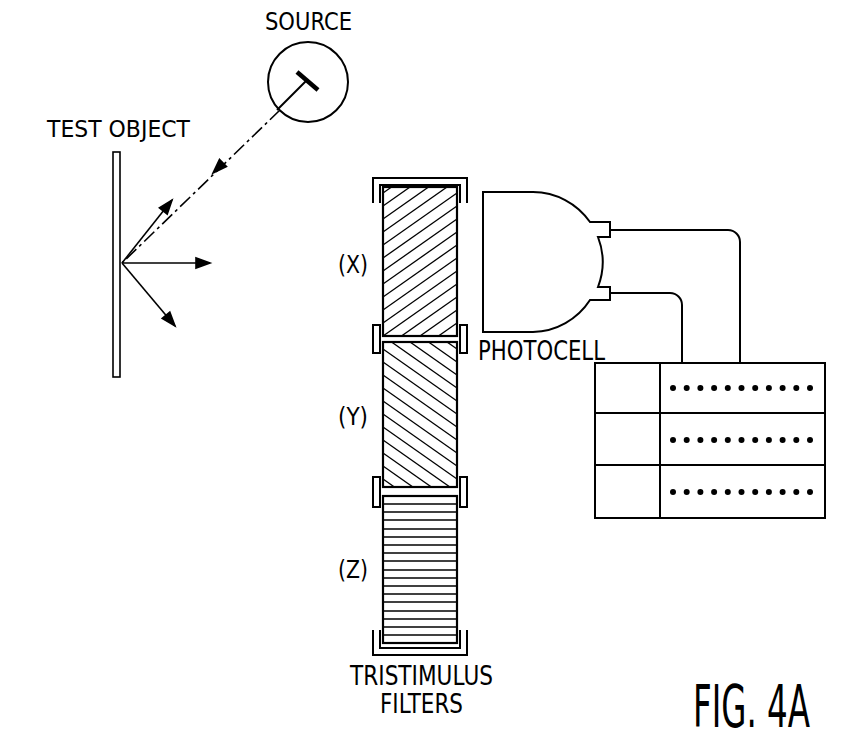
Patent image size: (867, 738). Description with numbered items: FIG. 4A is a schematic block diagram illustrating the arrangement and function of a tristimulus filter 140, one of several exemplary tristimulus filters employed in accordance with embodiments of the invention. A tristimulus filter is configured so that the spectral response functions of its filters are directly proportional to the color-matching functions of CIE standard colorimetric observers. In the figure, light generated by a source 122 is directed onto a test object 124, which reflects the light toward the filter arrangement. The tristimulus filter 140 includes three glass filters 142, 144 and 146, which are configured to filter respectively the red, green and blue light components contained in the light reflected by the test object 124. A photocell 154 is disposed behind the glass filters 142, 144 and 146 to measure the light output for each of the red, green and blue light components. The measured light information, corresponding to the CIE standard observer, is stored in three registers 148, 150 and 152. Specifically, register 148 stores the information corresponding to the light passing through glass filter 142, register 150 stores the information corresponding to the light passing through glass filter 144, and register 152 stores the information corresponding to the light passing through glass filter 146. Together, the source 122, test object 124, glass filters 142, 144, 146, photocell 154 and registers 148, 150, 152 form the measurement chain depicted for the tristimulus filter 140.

The source 122 is at (348, 84).
The test object 124 is at (121, 356).
The tristimulus filter 140 is at (545, 575).
The glass filter 142 is at (383, 283).
The glass filter 144 is at (383, 368).
The glass filter 146 is at (383, 518).
The register 148 is at (595, 392).
The register 150 is at (595, 440).
The register 152 is at (595, 492).
The photocell 154 is at (537, 192).